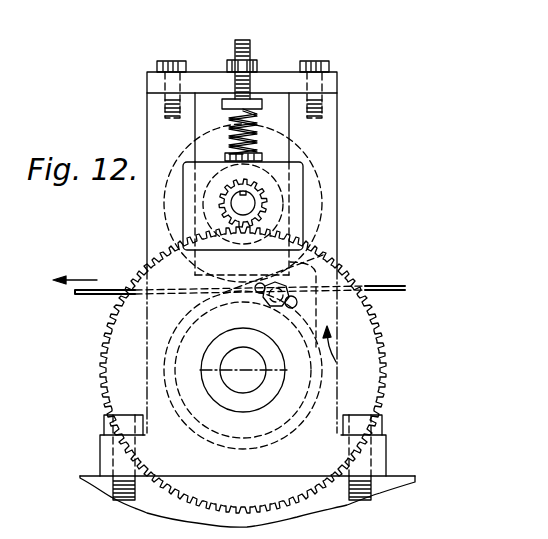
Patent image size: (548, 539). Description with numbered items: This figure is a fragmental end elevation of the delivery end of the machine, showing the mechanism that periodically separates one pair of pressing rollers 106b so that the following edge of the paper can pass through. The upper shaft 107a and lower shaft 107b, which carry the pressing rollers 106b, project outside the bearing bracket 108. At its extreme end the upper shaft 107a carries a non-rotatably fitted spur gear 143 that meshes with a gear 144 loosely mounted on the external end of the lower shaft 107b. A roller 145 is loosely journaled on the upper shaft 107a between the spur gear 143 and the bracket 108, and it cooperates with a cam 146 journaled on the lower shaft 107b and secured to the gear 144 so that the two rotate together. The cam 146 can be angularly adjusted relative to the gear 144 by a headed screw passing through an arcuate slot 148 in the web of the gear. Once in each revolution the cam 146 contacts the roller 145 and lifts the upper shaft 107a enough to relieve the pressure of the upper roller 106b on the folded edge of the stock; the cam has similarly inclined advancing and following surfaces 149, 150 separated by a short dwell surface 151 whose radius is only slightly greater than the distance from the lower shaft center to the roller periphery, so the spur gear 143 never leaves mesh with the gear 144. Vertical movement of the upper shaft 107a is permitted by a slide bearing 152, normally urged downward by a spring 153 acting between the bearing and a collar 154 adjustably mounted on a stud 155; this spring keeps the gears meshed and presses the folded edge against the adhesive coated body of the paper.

The longitudinal bracket 108 is at (247, 294).
The stud 155 is at (257, 58).
The collar 154 is at (276, 75).
The spring 153 is at (300, 135).
The slide bearing 152 is at (281, 204).
The upper shaft 107a is at (315, 197).
The spur gear 143 is at (186, 203).
The roller 145 is at (192, 204).
The pressing roller 106b is at (277, 291).
The dwell surface 151 is at (268, 336).
The advancing surface 149 is at (229, 300).
The arcuate slot 148 is at (338, 297).
The following surface 150 is at (327, 301).
The gear 144 is at (265, 370).
The cam 146 is at (243, 400).
The lower shaft 107b is at (217, 398).